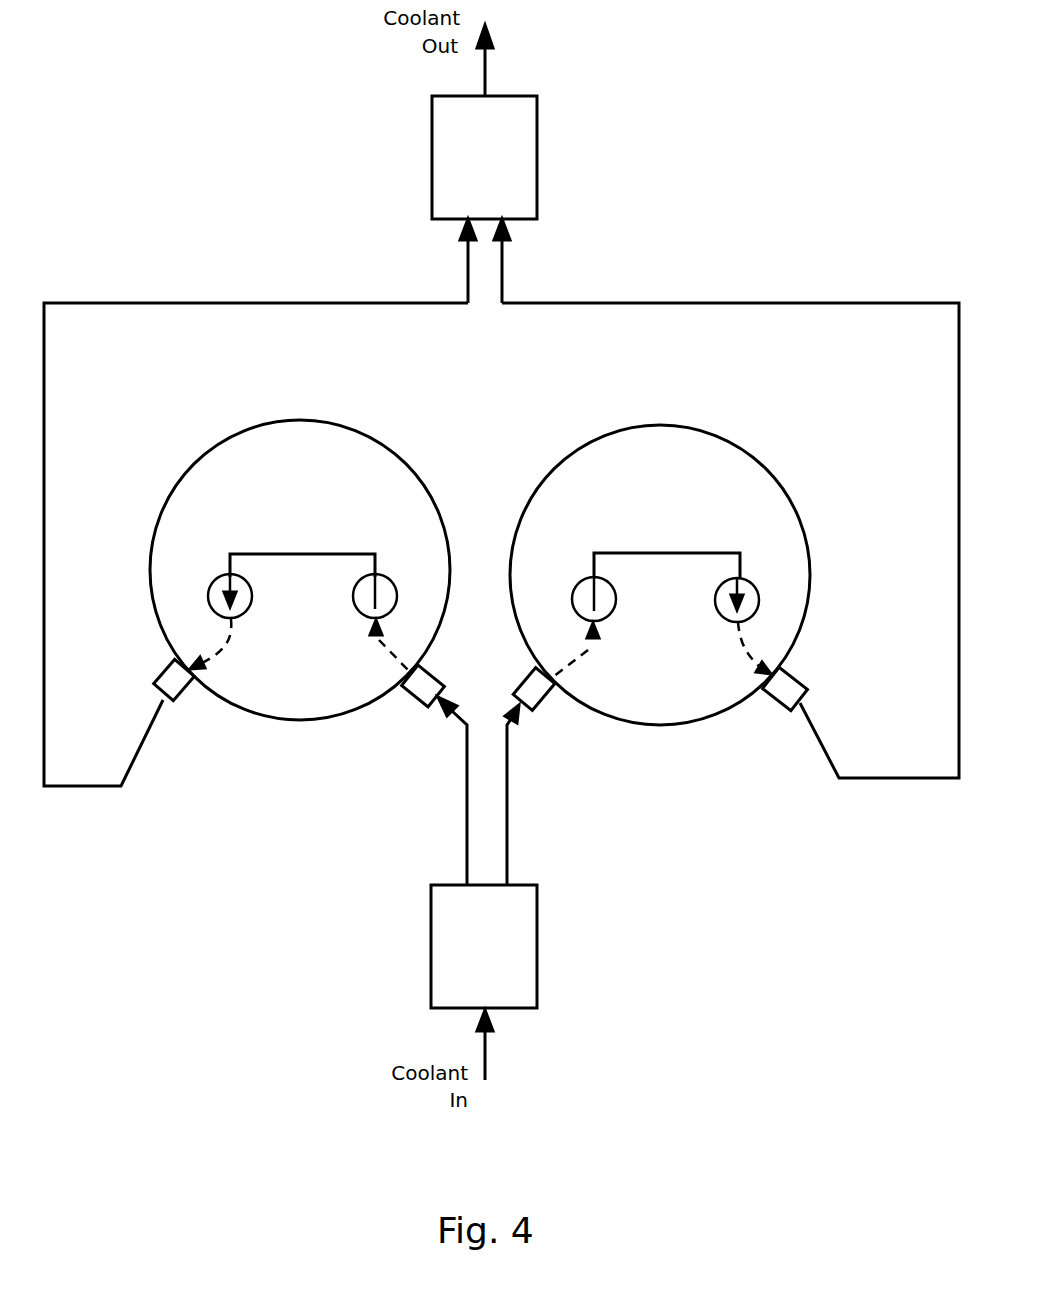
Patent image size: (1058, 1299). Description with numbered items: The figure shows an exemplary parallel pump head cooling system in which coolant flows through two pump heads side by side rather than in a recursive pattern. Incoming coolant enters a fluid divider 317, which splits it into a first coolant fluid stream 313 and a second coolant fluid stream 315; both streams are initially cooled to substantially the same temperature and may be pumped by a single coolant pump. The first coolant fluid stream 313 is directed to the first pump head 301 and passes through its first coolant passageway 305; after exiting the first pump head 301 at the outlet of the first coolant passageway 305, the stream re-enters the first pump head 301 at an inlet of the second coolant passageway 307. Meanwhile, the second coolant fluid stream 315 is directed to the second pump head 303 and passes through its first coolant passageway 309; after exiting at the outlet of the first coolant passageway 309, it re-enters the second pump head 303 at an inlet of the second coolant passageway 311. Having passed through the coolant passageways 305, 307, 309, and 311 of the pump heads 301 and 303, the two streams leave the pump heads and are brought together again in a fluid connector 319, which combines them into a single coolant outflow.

The first pump head 301 is at (279, 527).
The second pump head 303 is at (632, 536).
The first coolant passageway 305 is at (380, 645).
The second coolant passageway 307 is at (228, 637).
The first coolant passageway 309 is at (588, 653).
The second coolant passageway 311 is at (745, 653).
The first coolant fluid stream 313 is at (455, 787).
The second coolant fluid stream 315 is at (520, 779).
The fluid divider 317 is at (484, 946).
The fluid connector 319 is at (484, 157).